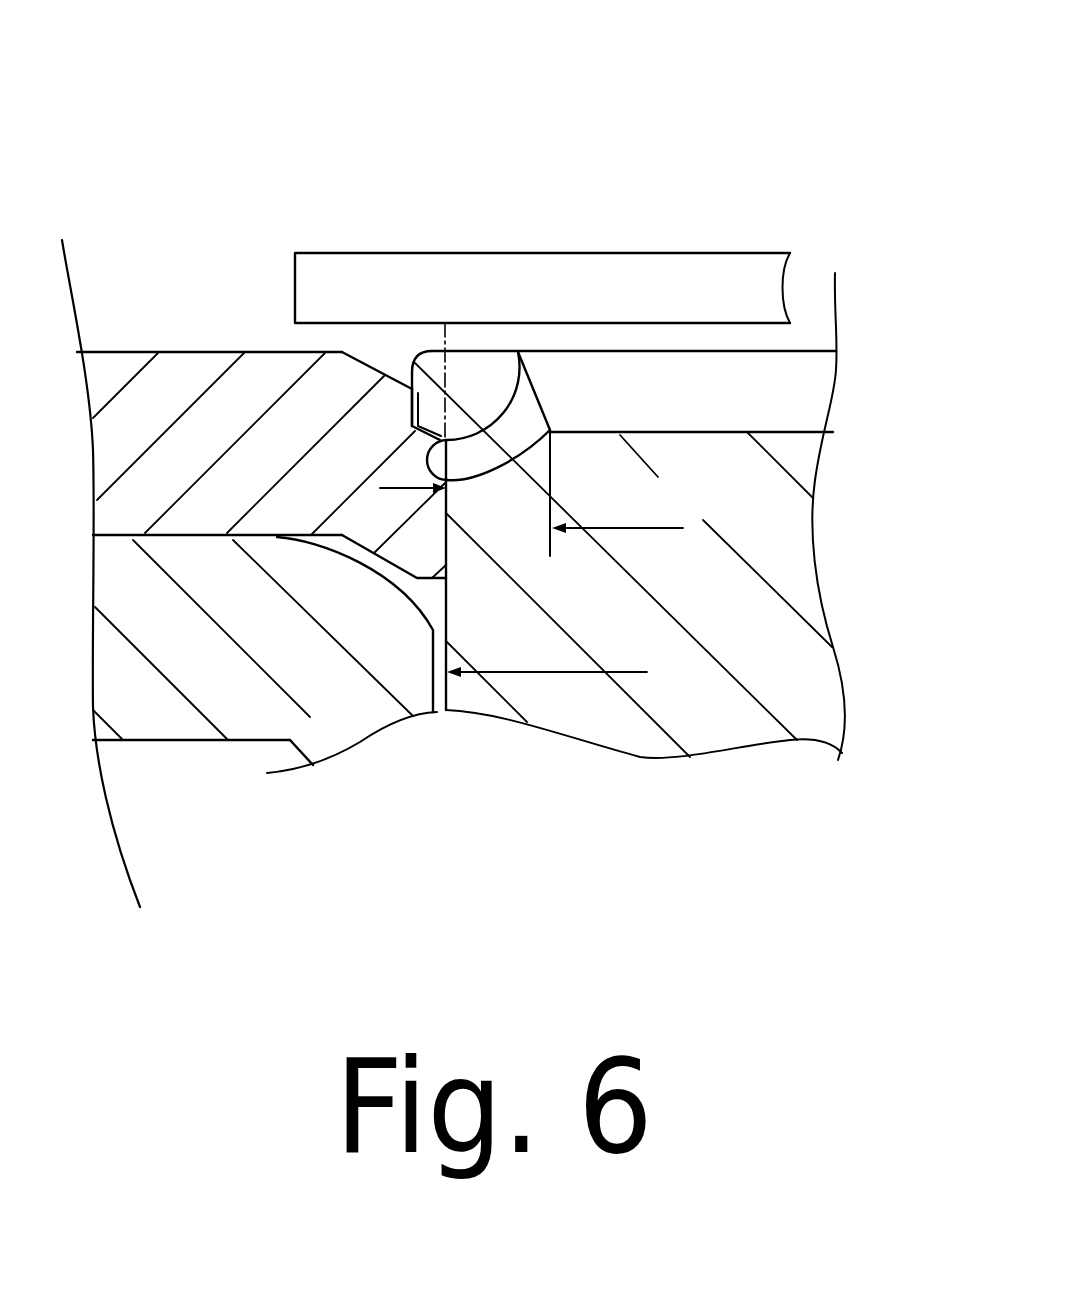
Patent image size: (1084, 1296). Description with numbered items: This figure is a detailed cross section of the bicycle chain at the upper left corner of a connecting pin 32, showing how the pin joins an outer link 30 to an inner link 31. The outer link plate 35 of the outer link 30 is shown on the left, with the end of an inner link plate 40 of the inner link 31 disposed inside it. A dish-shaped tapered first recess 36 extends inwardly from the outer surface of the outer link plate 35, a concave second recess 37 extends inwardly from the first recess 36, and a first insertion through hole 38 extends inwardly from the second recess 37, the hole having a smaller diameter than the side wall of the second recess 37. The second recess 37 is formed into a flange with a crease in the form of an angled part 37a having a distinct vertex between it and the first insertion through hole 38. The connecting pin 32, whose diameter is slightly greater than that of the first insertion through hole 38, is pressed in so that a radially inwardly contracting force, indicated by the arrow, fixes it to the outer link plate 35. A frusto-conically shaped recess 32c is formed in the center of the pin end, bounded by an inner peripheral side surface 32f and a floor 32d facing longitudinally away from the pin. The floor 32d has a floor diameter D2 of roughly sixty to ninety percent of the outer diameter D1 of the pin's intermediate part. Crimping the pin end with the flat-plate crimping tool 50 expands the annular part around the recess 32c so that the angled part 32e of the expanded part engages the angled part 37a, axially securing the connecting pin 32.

The outer link 30 is at (166, 364).
The inner link 31 is at (352, 712).
The connecting pin 32 is at (767, 532).
The frusto-conically shaped recess 32c is at (778, 392).
The floor 32d is at (848, 412).
The angled part 32e is at (550, 430).
The inner peripheral side surface 32f is at (512, 447).
The outer link plate 35 is at (206, 370).
The first recess 36 is at (384, 373).
The second recess 37 is at (430, 412).
The angled part 37a is at (518, 352).
The first insertion through hole 38 is at (447, 505).
The inner link plate 40 is at (203, 707).
The crimping tool 50 is at (750, 253).
The outer diameter of intermediate part D1 is at (547, 639).
The floor diameter D2 is at (632, 504).